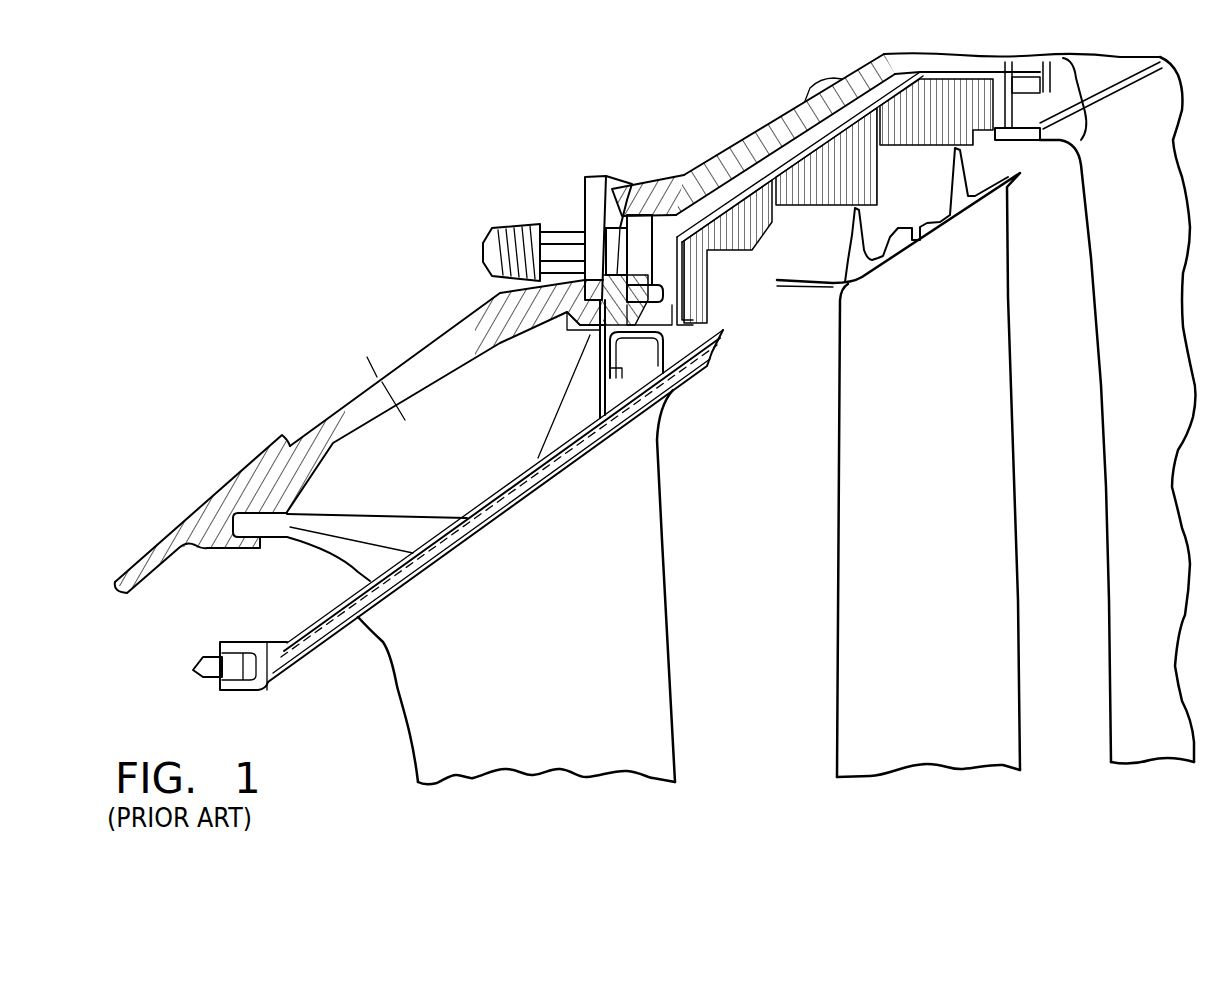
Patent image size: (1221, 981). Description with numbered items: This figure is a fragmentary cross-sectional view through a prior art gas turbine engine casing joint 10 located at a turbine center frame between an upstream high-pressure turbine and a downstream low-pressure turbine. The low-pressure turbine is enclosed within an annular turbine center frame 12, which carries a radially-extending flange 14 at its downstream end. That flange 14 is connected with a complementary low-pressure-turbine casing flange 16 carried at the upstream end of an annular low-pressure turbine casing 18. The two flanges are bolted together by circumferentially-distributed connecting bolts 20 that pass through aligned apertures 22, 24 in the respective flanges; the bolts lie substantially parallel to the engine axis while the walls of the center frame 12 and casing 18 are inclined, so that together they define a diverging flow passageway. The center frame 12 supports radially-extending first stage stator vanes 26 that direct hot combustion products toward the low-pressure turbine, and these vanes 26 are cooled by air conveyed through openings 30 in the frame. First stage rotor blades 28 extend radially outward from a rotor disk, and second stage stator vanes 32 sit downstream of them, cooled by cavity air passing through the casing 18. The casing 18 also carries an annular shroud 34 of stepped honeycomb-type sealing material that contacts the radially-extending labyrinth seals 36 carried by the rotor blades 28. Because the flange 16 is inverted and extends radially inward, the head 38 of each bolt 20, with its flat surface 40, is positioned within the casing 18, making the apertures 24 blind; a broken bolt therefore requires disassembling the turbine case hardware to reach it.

The gas turbine engine casing joint 10 is at (471, 141).
The turbine center frame 12 is at (243, 483).
The turbine center frame flange 14 is at (595, 188).
The low-pressure-turbine casing flange 16 is at (621, 176).
The low-pressure turbine casing 18 is at (810, 114).
The connecting bolts 20 is at (507, 243).
The aperture 22 is at (590, 250).
The aperture 24 is at (633, 208).
The first stage stator vanes 26 is at (556, 718).
The first stage rotor blades 28 is at (947, 665).
The openings 30 is at (331, 405).
The second stage stator vanes 32 is at (1159, 602).
The annular shroud 34 is at (967, 93).
The labyrinth seals 36 is at (852, 245).
The head 38 is at (645, 256).
The flat surface 40 is at (652, 296).